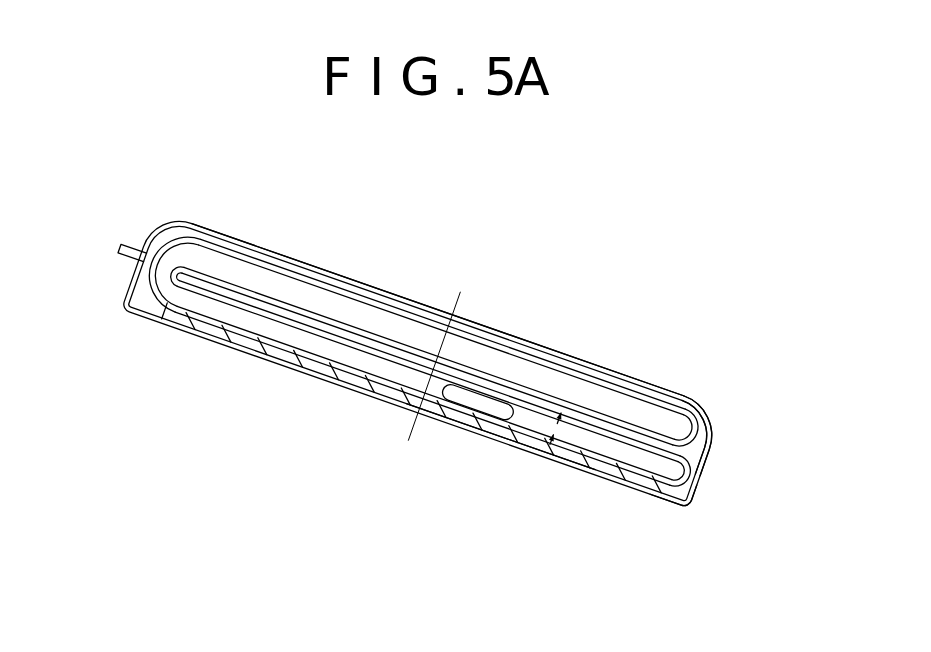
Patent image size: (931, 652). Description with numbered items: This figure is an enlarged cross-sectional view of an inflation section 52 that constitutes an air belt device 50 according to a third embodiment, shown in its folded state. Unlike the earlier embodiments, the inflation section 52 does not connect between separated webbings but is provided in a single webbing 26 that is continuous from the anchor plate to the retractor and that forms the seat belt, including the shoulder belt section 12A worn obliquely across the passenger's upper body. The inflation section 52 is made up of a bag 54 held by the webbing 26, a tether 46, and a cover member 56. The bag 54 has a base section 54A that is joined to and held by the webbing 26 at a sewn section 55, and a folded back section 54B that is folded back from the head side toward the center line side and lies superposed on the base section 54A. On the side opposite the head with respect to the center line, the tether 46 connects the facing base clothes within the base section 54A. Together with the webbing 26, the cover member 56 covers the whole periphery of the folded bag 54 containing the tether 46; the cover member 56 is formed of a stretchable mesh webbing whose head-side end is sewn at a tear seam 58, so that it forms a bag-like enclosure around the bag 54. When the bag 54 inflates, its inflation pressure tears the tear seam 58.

The air belt device 50 is at (688, 208).
The inflation section 52 is at (684, 294).
The shoulder belt section 12A is at (424, 359).
The bag 54 is at (603, 374).
The base section 54A is at (692, 505).
The folded back section 54B is at (702, 424).
The sewn section 55 is at (172, 303).
The cover member 56 is at (500, 325).
The tear seam 58 is at (141, 252).
The tether 46 is at (498, 406).
The webbing 26 is at (503, 440).